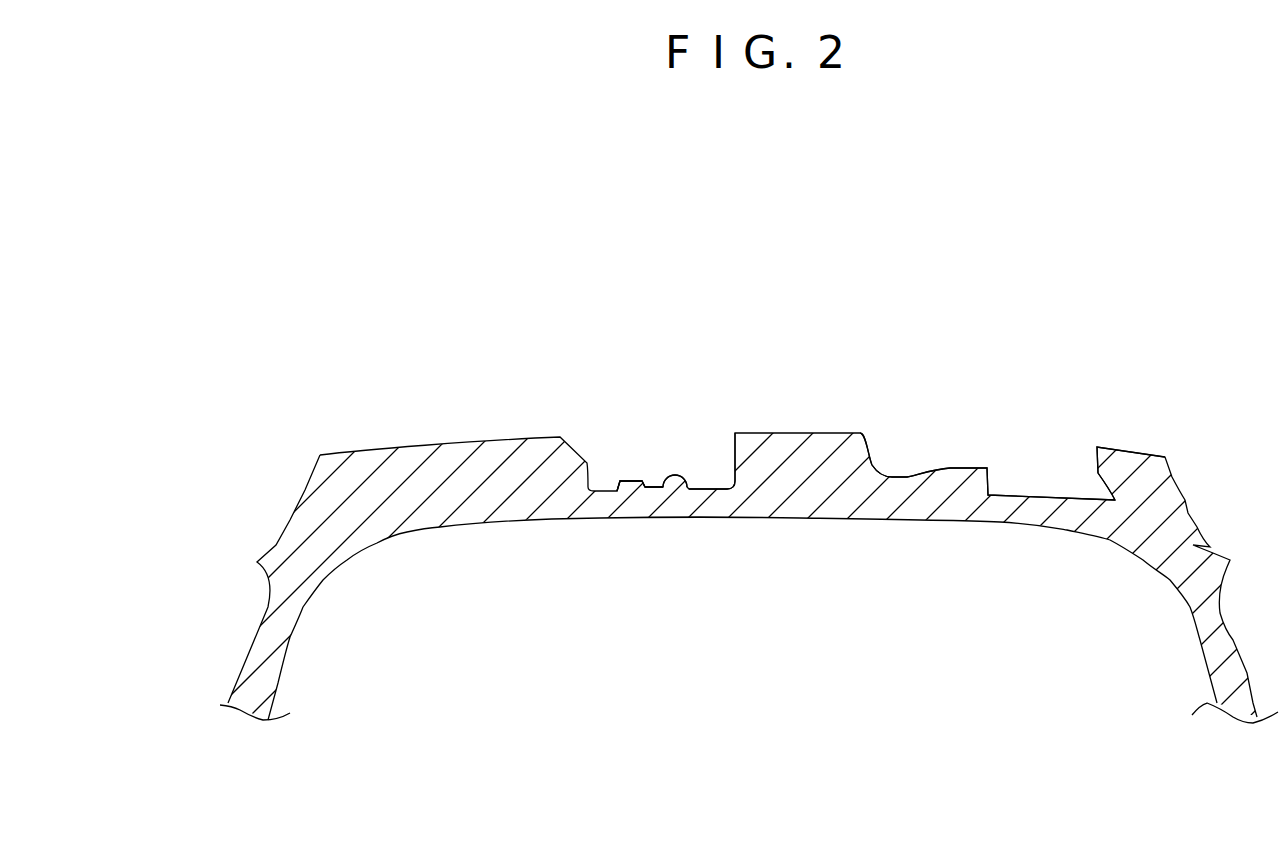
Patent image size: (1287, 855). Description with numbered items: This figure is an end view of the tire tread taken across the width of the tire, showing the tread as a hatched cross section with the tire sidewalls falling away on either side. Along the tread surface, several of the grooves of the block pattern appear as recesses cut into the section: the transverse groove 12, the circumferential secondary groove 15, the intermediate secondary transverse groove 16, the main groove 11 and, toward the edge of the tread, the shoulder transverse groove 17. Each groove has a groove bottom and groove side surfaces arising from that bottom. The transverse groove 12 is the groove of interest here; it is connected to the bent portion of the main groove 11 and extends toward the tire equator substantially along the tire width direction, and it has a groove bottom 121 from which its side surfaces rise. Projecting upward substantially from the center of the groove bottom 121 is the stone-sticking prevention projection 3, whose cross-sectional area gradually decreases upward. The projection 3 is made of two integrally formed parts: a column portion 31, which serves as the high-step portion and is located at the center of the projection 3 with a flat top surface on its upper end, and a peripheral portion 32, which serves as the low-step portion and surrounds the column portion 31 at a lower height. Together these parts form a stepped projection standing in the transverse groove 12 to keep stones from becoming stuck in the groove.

The stone-sticking prevention projection 3 is at (555, 390).
The column portion 31 is at (632, 478).
The peripheral portion 32 is at (650, 484).
The transverse groove 12 is at (662, 410).
The circumferential secondary groove 15 is at (725, 413).
The intermediate secondary transverse groove 16 is at (907, 452).
The main groove 11 is at (1005, 470).
The shoulder transverse groove 17 is at (1065, 478).
The groove bottom 121 is at (687, 490).